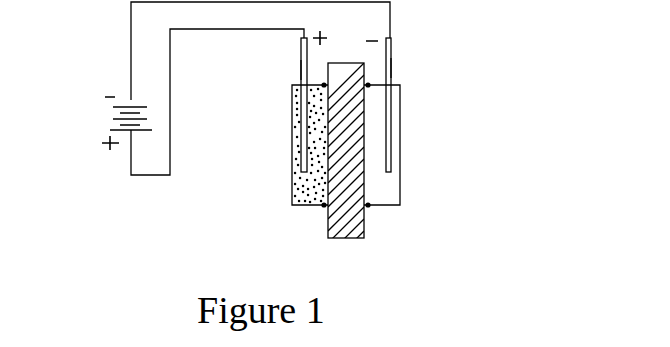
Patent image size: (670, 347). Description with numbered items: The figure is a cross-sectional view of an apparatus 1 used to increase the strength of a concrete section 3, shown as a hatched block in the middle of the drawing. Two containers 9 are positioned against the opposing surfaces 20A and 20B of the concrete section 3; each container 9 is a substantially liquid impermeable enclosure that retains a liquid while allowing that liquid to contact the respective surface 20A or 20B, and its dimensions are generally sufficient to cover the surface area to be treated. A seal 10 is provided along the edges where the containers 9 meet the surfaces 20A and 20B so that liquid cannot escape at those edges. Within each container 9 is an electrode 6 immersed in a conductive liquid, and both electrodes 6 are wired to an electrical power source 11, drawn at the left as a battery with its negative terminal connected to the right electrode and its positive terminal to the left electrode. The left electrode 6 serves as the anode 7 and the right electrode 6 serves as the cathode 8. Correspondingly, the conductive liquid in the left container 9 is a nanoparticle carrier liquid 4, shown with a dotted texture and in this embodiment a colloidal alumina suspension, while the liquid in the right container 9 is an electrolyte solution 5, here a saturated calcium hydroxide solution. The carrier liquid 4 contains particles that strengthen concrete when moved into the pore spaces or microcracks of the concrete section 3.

The apparatus 1 is at (503, 68).
The concrete section 3 is at (356, 240).
The nanoparticle carrier liquid 4 is at (292, 193).
The electrolyte solution 5 is at (388, 185).
The electrode 6 is at (301, 52).
The anode 7 is at (301, 70).
The cathode 8 is at (391, 68).
The container 9 is at (292, 128).
The seal 10 is at (324, 208).
The electrical power source 11 is at (98, 116).
The surface 20A is at (327, 230).
The surface 20B is at (366, 226).